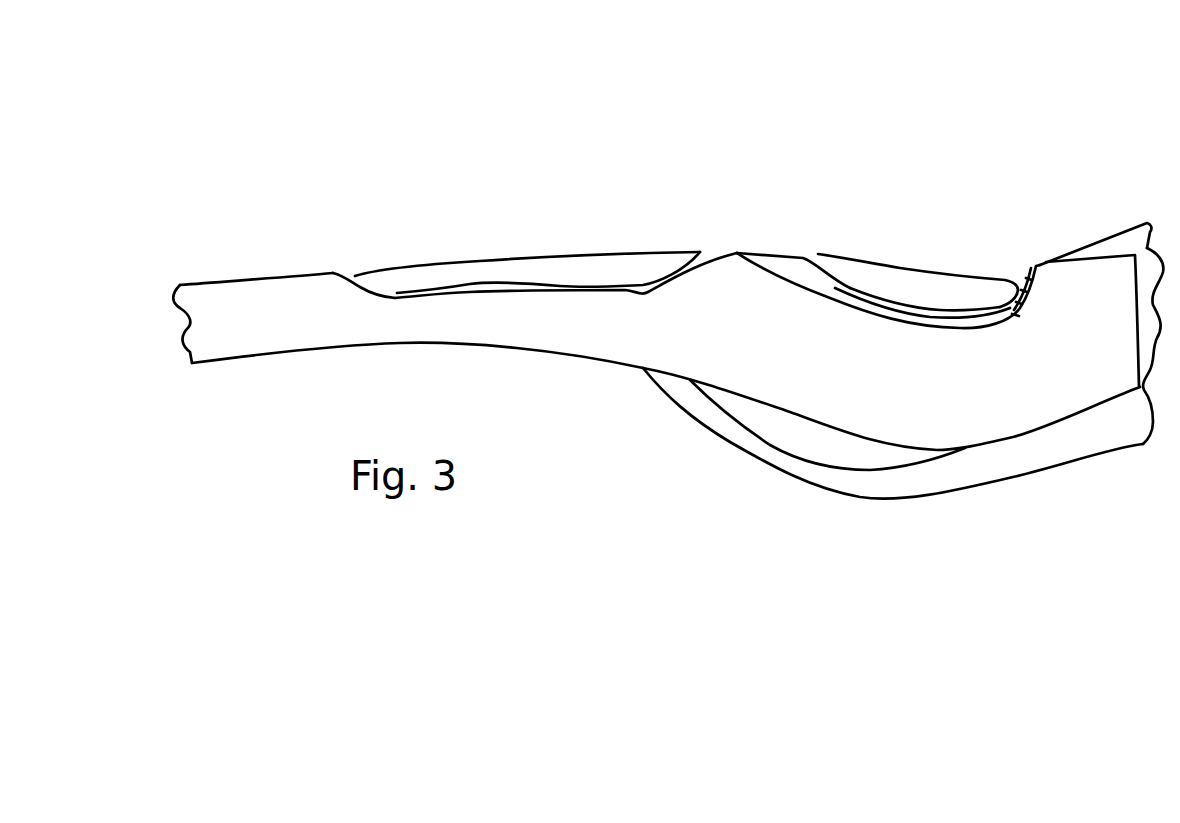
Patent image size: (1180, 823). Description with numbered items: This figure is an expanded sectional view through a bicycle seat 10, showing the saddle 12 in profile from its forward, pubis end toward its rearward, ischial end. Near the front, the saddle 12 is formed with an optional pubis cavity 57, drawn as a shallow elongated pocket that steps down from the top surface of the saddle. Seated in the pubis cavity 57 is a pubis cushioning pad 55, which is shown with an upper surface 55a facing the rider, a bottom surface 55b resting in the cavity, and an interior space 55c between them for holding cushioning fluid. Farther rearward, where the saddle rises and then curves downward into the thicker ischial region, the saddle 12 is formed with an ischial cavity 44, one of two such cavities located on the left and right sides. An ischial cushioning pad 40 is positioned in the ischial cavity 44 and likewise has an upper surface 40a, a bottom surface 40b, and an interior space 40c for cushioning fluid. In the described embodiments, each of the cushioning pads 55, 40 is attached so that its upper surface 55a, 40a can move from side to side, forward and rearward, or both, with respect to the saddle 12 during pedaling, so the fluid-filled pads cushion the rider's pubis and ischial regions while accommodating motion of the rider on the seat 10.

The bicycle seat 10 is at (580, 68).
The saddle 12 is at (275, 270).
The pubis cavity 57 is at (351, 273).
The pubis cushioning pad 55 is at (546, 239).
The upper surface 55a is at (533, 256).
The bottom surface 55b is at (616, 285).
The interior space 55c is at (557, 275).
The ischial cavity 44 is at (815, 265).
The ischial cushioning pad 40 is at (946, 250).
The upper surface 40a is at (937, 287).
The bottom surface 40b is at (960, 307).
The interior space 40c is at (953, 270).